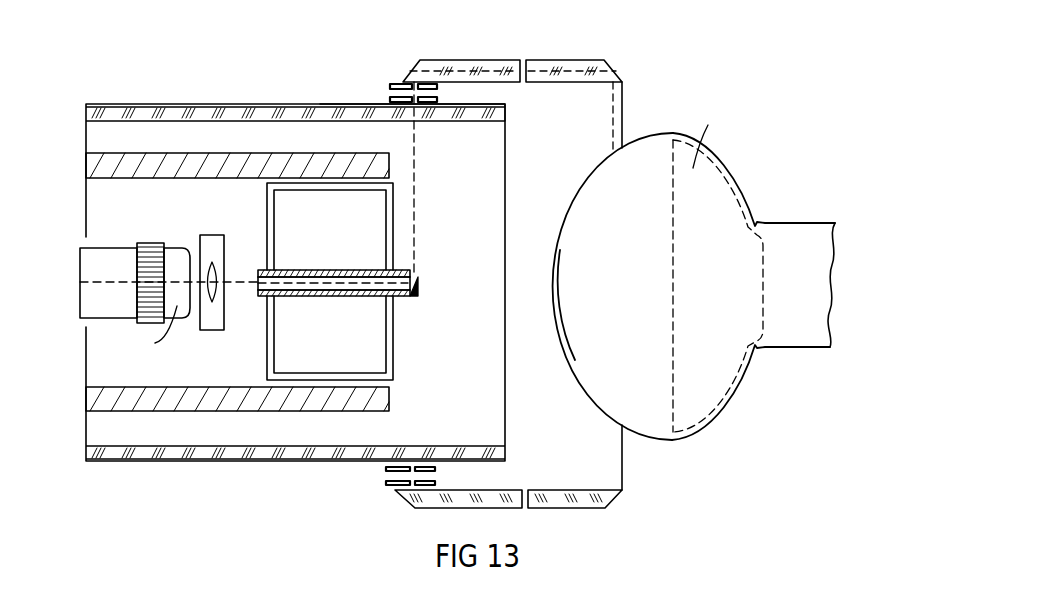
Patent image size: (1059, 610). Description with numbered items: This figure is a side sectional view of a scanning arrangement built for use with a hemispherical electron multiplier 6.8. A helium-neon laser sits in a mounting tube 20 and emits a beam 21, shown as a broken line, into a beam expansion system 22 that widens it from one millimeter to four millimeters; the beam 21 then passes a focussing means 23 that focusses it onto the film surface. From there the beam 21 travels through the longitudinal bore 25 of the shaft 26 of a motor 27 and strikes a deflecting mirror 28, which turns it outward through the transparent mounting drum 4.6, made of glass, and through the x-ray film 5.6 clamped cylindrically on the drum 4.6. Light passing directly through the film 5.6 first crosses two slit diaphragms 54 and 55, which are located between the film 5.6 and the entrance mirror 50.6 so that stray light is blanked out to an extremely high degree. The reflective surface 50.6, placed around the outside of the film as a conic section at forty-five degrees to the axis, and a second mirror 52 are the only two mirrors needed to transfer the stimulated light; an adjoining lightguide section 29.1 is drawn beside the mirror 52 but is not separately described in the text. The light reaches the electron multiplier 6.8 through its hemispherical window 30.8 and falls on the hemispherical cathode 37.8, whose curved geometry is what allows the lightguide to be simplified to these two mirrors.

The mounting drum 4.6 is at (252, 105).
The x-ray film 5.6 is at (322, 105).
The mounting tube 20 is at (137, 157).
The beam 21 is at (416, 236).
The expansion system 22 is at (103, 258).
The focussing means 23 is at (212, 241).
The longitudinal bore 25 is at (285, 281).
The shaft 26 is at (353, 271).
The motor 27 is at (366, 356).
The deflecting mirror 28 is at (421, 291).
The light collecting element 29.1 is at (538, 68).
The hemispherical window 30.8 is at (590, 186).
The cathode 37.8 is at (569, 223).
The reflective surface 50.6 is at (419, 68).
The mirror 52 is at (614, 74).
The slit diaphragm 54 is at (393, 84).
The slit diaphragm 55 is at (390, 98).
The electron multiplier 6.8 is at (742, 205).